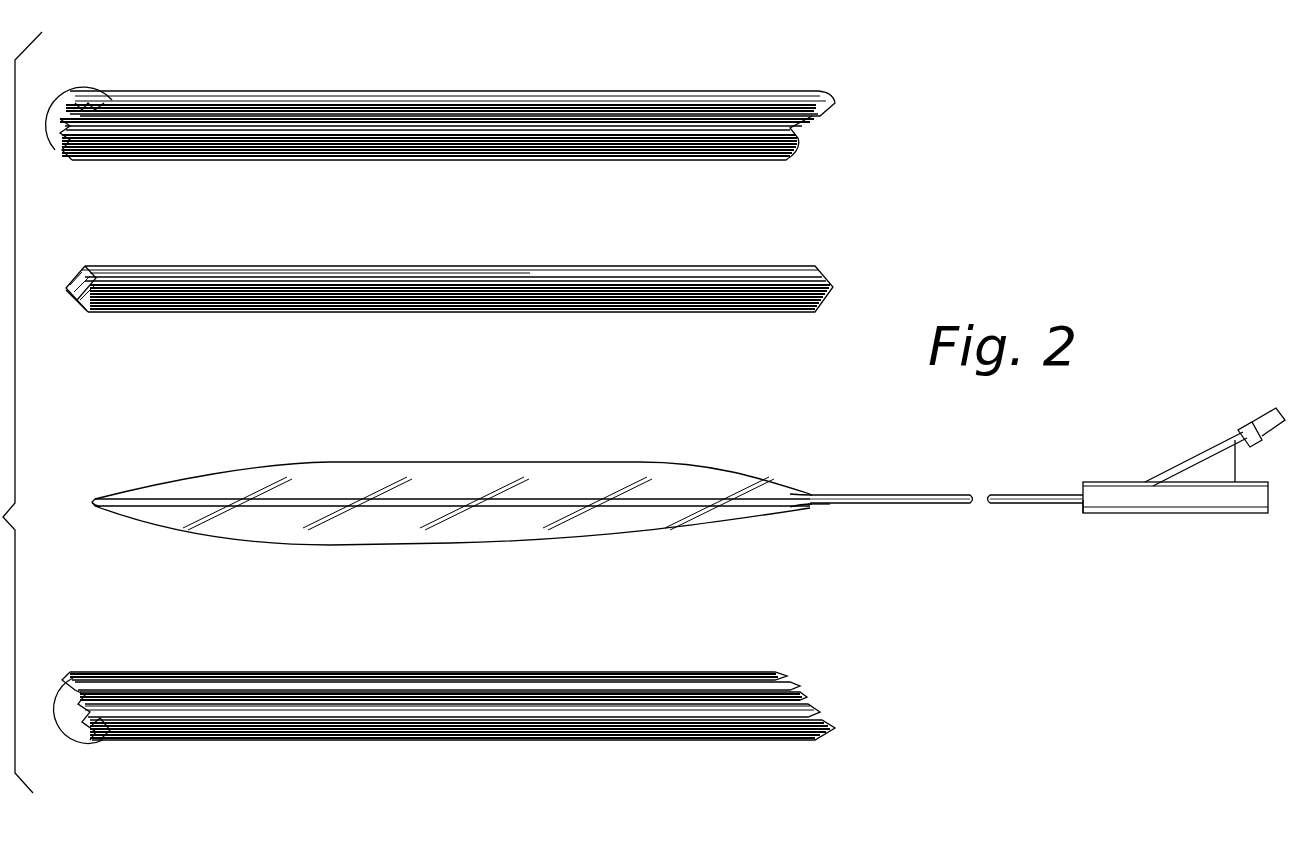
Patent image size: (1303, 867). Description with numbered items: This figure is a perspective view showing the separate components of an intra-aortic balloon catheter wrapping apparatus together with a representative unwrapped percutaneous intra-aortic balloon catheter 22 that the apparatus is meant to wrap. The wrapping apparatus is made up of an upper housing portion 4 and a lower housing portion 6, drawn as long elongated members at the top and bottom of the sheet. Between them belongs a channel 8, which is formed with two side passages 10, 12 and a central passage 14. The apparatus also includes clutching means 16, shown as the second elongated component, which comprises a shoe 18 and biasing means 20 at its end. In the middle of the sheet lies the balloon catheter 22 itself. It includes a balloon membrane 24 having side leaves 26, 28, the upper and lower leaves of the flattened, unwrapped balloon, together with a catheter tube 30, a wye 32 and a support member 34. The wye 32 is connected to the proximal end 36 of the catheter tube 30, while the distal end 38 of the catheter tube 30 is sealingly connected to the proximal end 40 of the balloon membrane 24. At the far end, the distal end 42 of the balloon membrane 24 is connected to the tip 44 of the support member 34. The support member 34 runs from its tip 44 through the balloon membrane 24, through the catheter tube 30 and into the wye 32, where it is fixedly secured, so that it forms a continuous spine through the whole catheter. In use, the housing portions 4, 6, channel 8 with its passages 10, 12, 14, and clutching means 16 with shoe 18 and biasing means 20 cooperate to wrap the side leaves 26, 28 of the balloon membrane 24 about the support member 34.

The upper housing portion 4 is at (450, 91).
The lower housing portion 6 is at (265, 738).
The channel 8 is at (56, 142).
The side passage 10 is at (72, 676).
The side passage 12 is at (96, 740).
The central passage 14 is at (72, 100).
The clutching means 16 is at (447, 244).
The shoe 18 is at (75, 305).
The biasing means 20 is at (80, 280).
The intra-aortic balloon catheter 22 is at (888, 465).
The balloon membrane 24 is at (452, 505).
The side leaf 26 is at (567, 476).
The side leaf 28 is at (597, 530).
The catheter tube 30 is at (918, 505).
The wye 32 is at (1108, 482).
The support member 34 is at (195, 498).
The proximal end of catheter tube 36 is at (1083, 508).
The distal end of catheter tube 38 is at (814, 508).
The proximal end of balloon membrane 40 is at (800, 492).
The distal end of balloon membrane 42 is at (95, 506).
The tip 44 is at (92, 501).